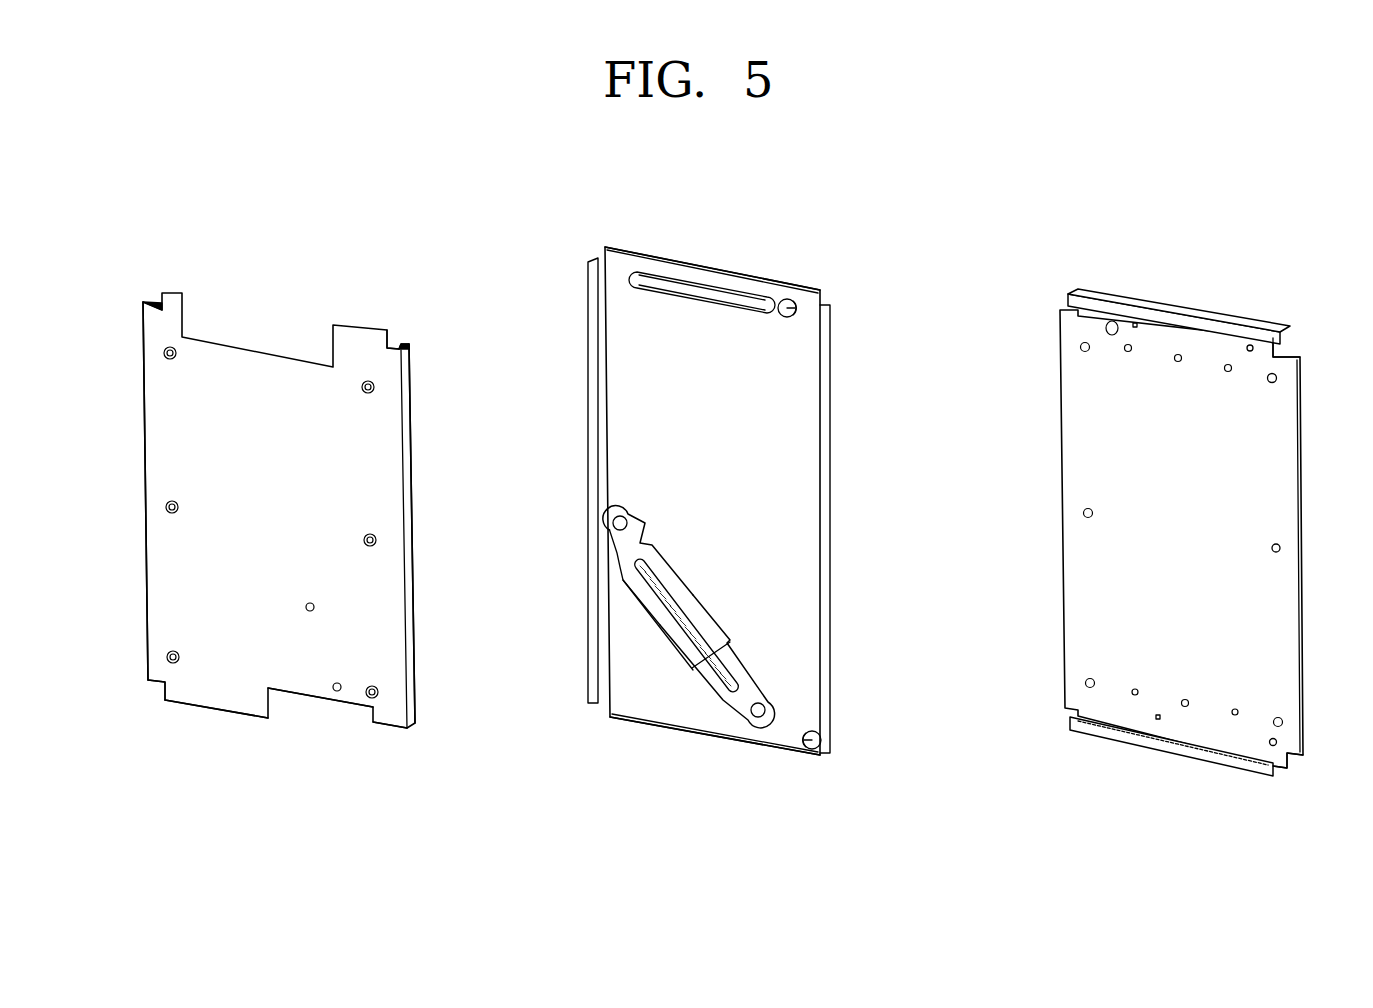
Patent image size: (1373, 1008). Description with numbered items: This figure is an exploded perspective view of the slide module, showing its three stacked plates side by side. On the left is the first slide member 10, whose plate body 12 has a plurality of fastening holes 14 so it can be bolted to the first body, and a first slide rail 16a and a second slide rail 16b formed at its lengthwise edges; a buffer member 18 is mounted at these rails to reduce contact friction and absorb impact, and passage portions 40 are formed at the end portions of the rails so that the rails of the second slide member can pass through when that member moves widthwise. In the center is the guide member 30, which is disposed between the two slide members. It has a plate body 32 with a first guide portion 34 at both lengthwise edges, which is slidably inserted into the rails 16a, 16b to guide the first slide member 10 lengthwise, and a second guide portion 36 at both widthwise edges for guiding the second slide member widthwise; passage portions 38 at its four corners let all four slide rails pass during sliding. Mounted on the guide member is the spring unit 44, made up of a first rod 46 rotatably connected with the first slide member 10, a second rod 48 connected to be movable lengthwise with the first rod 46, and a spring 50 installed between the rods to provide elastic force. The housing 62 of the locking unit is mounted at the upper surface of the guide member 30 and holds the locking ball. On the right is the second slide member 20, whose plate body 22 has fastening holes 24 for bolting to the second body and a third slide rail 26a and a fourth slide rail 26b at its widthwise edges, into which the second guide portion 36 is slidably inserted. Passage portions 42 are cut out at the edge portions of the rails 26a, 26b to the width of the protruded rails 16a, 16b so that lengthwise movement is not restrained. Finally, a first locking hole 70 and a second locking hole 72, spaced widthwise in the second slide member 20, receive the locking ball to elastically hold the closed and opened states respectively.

The first slide member 10 is at (128, 513).
The plate body 12 is at (213, 692).
The fastening holes 14 is at (370, 707).
The first slide rail 16a is at (143, 368).
The second slide rail 16b is at (412, 372).
The buffer member 18 is at (404, 347).
The passage portions 40 is at (153, 298).
The guide member 30 is at (713, 503).
The plate body 32 is at (783, 578).
The first guide portion 34 is at (739, 503).
The second guide portion 36 is at (737, 272).
The passage portions 38 is at (598, 257).
The spring unit 44 is at (627, 617).
The first rod 46 is at (747, 697).
The second rod 48 is at (623, 537).
The spring 50 is at (667, 597).
The housing 62 is at (797, 312).
The second slide member 20 is at (1161, 535).
The plate body 22 is at (1273, 647).
The fastening holes 24 is at (1276, 382).
The third slide rail 26a is at (1180, 322).
The fourth slide rail 26b is at (1095, 731).
The passage portions 42 is at (1283, 340).
The first locking hole 70 is at (1250, 345).
The second locking hole 72 is at (1135, 322).